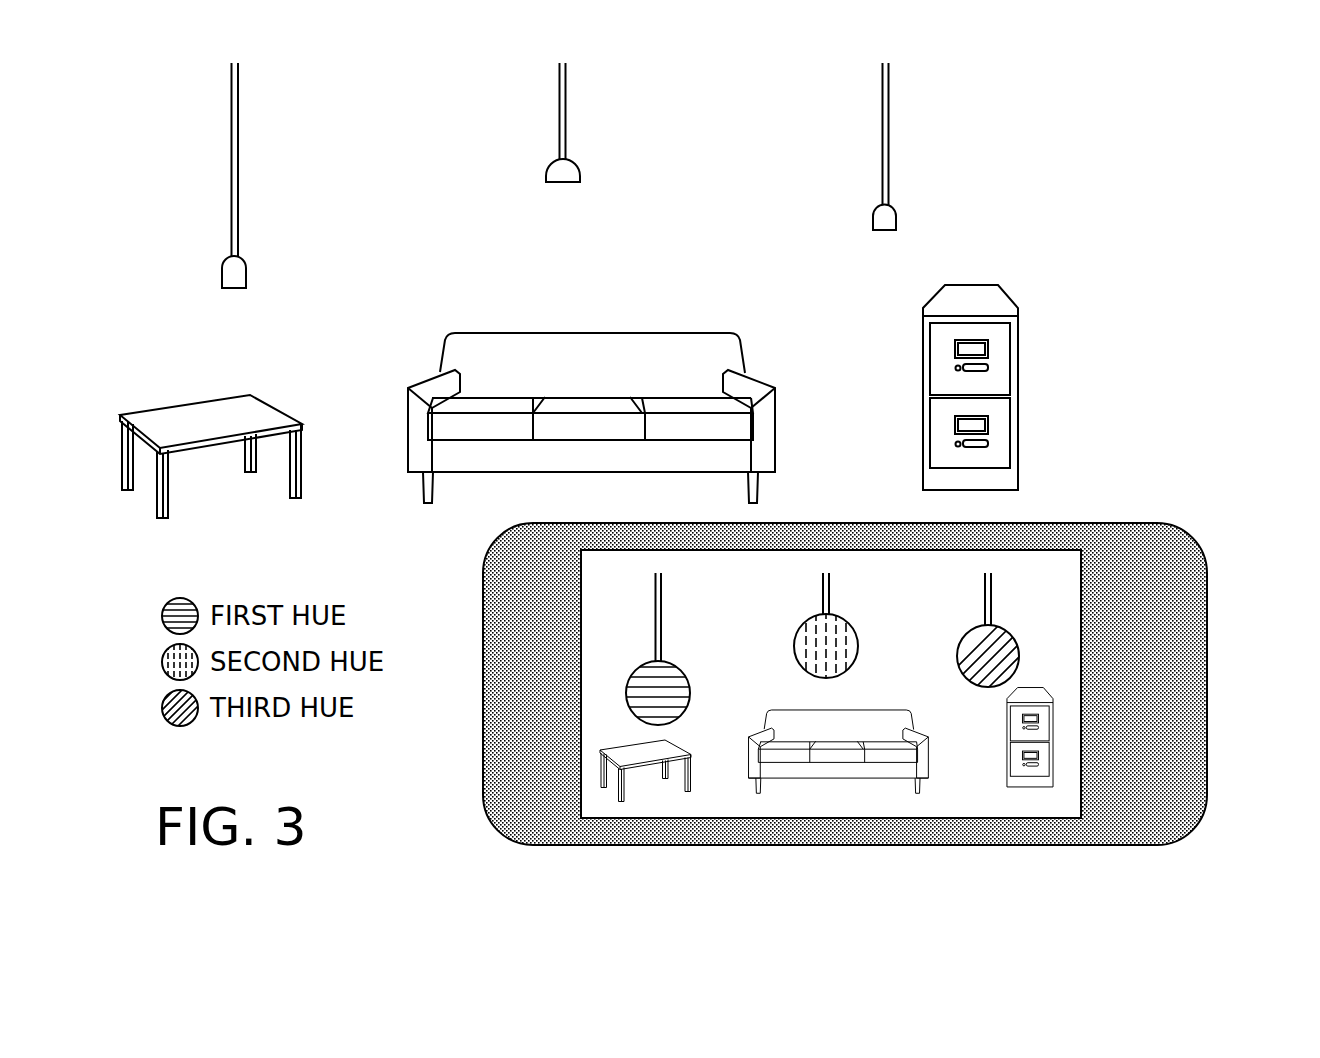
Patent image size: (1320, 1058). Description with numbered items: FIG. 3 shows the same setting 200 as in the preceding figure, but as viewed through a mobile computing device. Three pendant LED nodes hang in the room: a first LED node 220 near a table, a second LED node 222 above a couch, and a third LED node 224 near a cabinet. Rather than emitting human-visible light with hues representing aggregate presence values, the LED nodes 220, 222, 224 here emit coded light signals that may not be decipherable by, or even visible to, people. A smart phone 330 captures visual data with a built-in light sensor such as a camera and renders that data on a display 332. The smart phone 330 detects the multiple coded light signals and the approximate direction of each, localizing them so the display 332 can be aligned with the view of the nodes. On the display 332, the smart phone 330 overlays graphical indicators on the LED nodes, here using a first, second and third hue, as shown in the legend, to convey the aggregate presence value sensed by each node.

The setting 200 is at (1143, 92).
The first LED node 220 is at (238, 150).
The second LED node 222 is at (566, 97).
The third LED node 224 is at (889, 133).
The smart phone 330 is at (1207, 586).
The display 332 is at (960, 793).